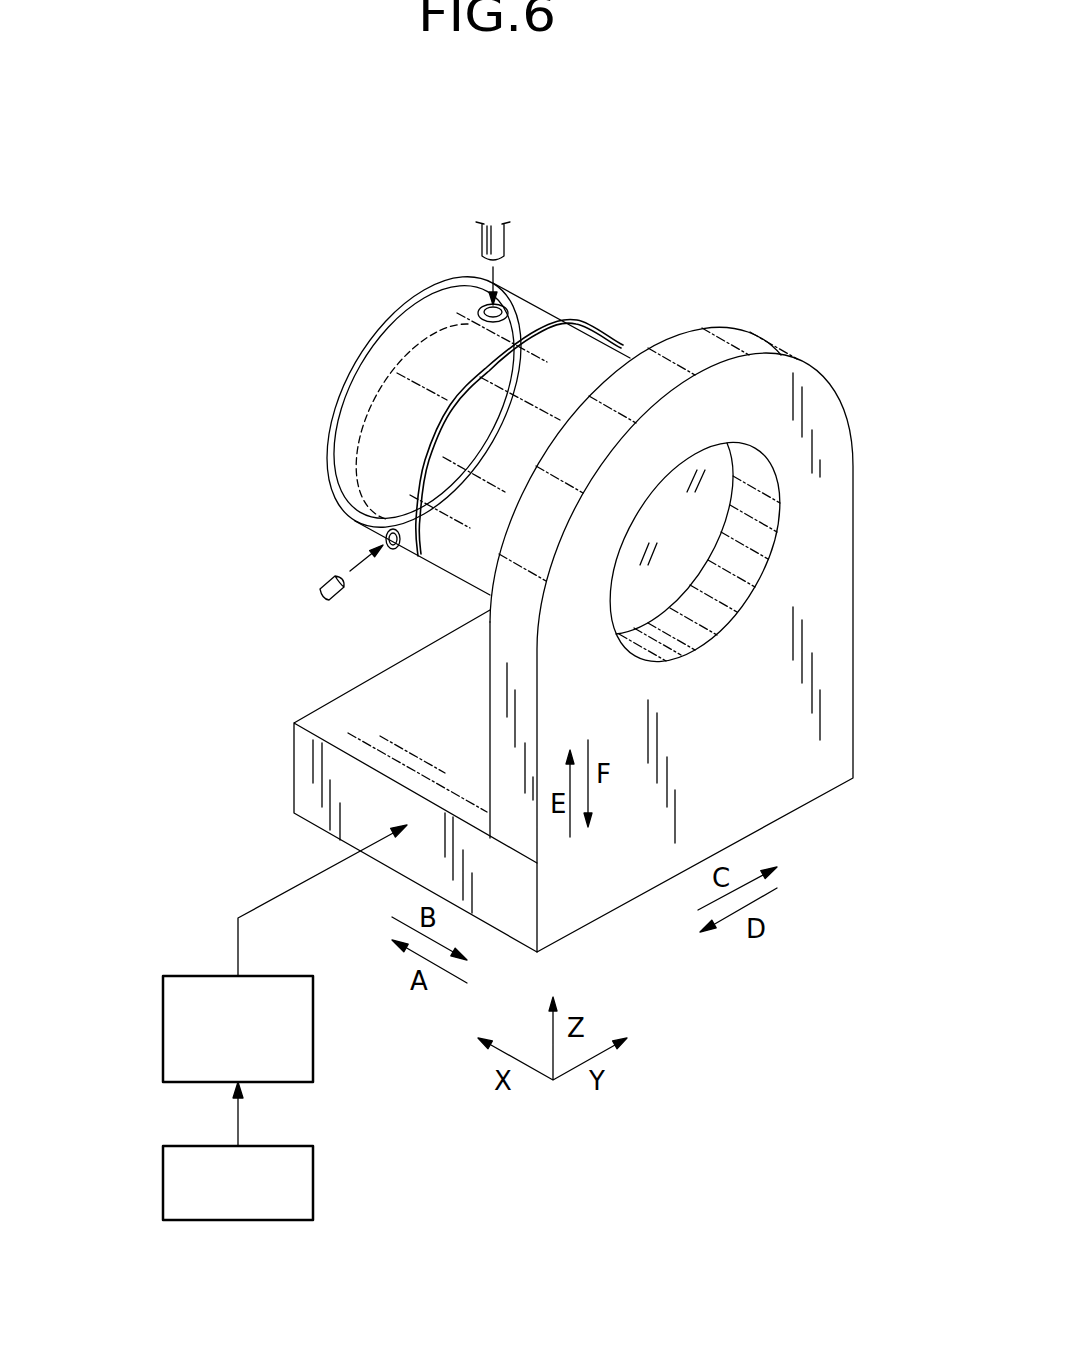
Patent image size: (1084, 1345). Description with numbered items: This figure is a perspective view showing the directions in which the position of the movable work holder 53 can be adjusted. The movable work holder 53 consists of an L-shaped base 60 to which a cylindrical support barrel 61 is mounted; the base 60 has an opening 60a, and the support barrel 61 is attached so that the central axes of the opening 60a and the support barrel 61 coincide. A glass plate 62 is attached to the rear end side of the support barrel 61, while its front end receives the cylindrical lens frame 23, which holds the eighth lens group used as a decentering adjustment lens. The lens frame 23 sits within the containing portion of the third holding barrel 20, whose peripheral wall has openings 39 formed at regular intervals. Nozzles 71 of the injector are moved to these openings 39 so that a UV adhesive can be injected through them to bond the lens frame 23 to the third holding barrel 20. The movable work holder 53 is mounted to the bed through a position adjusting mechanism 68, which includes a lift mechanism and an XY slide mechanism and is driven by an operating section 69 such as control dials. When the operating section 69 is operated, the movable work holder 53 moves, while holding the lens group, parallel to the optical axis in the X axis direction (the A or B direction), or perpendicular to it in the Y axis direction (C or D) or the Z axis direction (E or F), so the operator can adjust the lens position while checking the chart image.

The third holding barrel 20 is at (428, 367).
The lens frame 23 is at (348, 434).
The openings 39 is at (480, 310).
The movable work holder 53 is at (816, 295).
The L-shaped base 60 is at (720, 340).
The opening 60a is at (758, 520).
The support barrel 61 is at (587, 347).
The glass plate 62 is at (658, 592).
The position adjusting mechanism 68 is at (163, 1034).
The operating section 69 is at (163, 1192).
The nozzles 71 is at (505, 242).